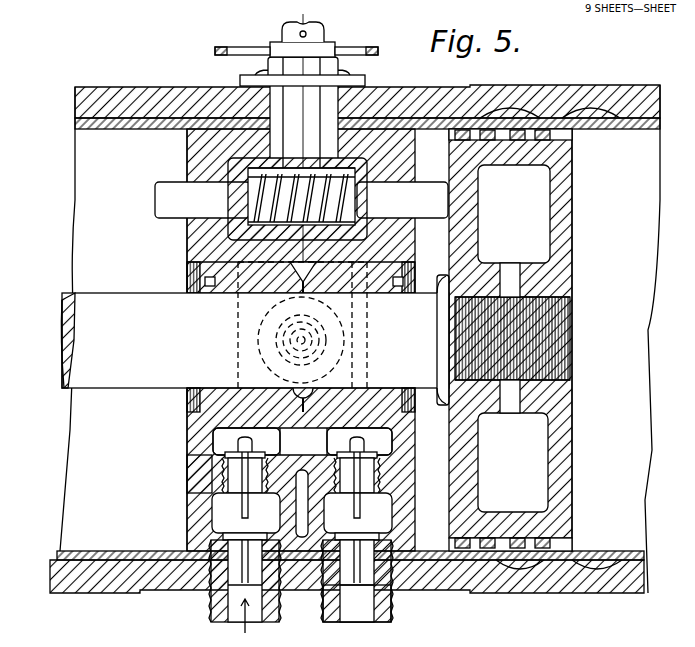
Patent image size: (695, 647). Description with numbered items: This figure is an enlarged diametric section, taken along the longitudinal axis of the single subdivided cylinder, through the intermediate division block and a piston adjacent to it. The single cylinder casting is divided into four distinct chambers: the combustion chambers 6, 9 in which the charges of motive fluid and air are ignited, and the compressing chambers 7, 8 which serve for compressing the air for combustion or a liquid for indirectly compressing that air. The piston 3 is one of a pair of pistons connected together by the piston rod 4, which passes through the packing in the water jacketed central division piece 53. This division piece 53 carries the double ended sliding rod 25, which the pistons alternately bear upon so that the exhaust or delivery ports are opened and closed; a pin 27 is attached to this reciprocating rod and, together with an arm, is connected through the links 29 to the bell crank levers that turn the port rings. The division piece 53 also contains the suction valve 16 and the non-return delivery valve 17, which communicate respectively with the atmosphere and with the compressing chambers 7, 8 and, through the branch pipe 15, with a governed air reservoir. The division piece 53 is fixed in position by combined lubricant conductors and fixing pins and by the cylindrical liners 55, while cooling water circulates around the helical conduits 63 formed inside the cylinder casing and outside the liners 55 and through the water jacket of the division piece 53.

The piston 3 is at (567, 248).
The piston rod 4 is at (255, 333).
The combustion chamber 6 is at (357, 440).
The compressing chamber 7 is at (123, 319).
The compressing chamber 8 is at (312, 469).
The combustion chamber 9 is at (616, 339).
The branch pipe 15 is at (334, 442).
The suction valve 16 is at (250, 500).
The non-return delivery valve 17 is at (213, 440).
The sliding rod 25 is at (301, 200).
The pin 27 is at (301, 157).
The link 29 is at (345, 50).
The central division piece 53 is at (200, 472).
The cylindrical liner 55 is at (596, 126).
The helical conduit 63 is at (594, 566).